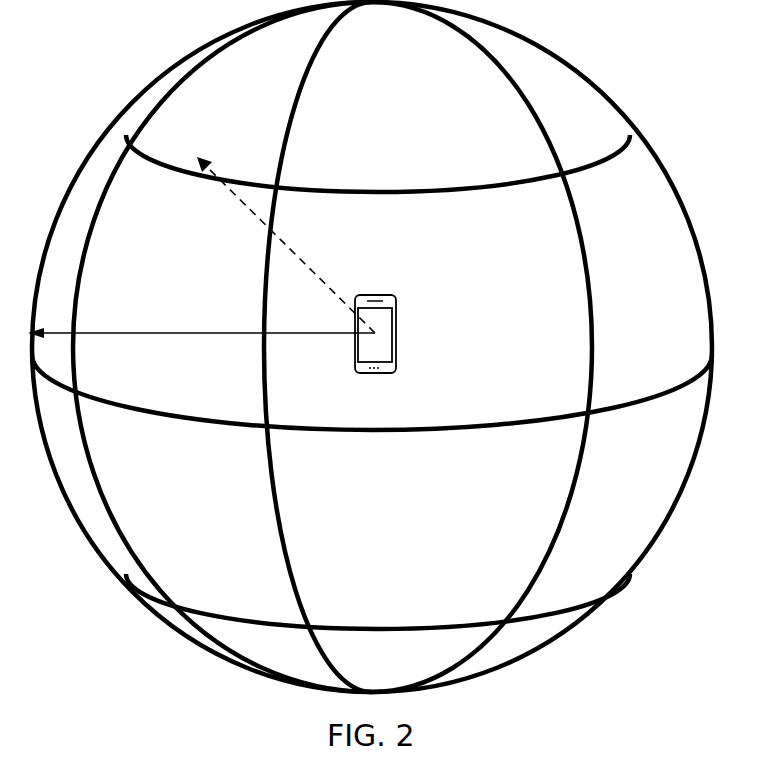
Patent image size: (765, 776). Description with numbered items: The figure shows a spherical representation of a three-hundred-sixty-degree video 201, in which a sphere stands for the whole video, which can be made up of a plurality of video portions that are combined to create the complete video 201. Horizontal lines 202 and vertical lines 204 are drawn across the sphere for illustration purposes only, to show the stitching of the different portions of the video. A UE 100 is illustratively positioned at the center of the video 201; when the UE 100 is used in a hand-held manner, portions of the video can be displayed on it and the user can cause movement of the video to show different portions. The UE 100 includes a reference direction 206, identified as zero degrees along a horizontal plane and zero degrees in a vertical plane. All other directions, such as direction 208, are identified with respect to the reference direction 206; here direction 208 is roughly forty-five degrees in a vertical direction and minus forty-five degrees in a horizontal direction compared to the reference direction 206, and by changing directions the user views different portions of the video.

The UE 100 is at (356, 358).
The 360-degree video 201 is at (596, 74).
The horizontal lines 202 is at (514, 421).
The vertical lines 204 is at (270, 479).
The reference direction 206 is at (207, 333).
The direction 208 is at (309, 265).